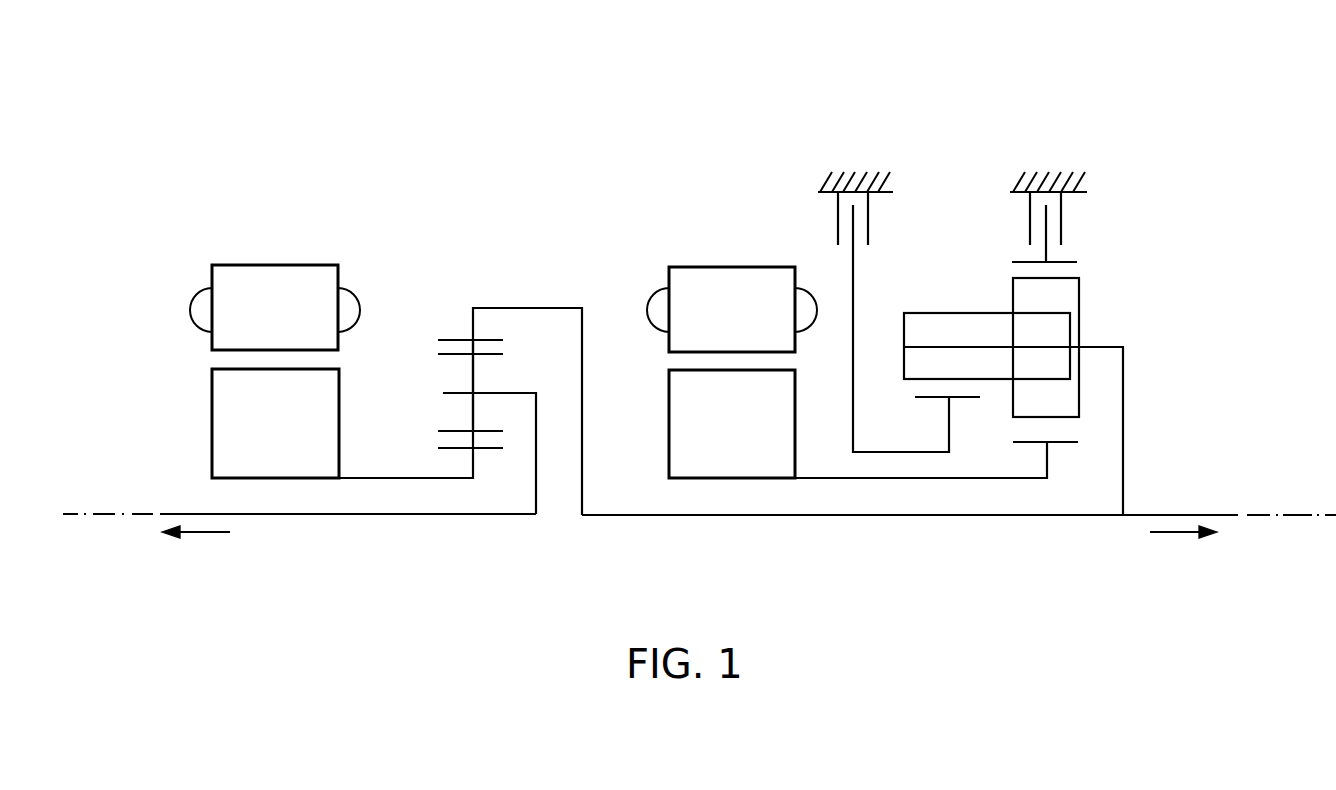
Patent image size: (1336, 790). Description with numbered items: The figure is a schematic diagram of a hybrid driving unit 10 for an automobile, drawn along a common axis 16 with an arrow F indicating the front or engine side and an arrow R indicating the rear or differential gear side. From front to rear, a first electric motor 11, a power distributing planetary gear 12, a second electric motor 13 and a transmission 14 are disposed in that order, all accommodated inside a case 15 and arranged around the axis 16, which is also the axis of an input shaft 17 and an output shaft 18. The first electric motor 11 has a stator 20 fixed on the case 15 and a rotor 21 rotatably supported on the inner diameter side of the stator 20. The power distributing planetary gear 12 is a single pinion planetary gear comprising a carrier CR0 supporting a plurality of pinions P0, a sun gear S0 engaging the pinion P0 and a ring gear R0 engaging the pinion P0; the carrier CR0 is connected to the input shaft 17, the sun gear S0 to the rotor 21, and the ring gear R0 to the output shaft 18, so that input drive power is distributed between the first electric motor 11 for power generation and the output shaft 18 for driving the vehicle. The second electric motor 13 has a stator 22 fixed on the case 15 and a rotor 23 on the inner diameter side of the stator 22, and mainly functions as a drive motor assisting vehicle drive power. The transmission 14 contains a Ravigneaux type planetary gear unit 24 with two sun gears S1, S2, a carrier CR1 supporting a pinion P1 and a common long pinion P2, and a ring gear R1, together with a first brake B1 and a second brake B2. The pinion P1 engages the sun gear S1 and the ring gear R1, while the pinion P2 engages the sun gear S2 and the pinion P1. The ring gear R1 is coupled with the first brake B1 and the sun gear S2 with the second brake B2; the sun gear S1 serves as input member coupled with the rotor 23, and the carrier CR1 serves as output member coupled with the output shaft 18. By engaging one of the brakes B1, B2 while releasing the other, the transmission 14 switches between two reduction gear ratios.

The hybrid driving unit 10 is at (623, 83).
The first electric motor 11 is at (260, 272).
The power distributing planetary gear 12 is at (460, 375).
The second electric motor 13 is at (719, 275).
The transmission 14 is at (999, 307).
The case 15 is at (827, 183).
The axis 16 is at (1268, 517).
The input shaft 17 is at (508, 514).
The output shaft 18 is at (838, 517).
The stator 20 is at (217, 340).
The rotor 21 is at (217, 428).
The stator 22 is at (680, 343).
The rotor 23 is at (675, 433).
The Ravigneaux type planetary gear unit 24 is at (961, 308).
The ring gear R0 is at (445, 337).
The pinion P0 is at (473, 372).
The sun gear S0 is at (443, 432).
The carrier CR0 is at (537, 415).
The second brake B2 is at (868, 223).
The first brake B1 is at (1030, 223).
The ring gear R1 is at (1070, 255).
The pinion P1 is at (1079, 292).
The pinion P2 is at (916, 313).
The sun gear S2 is at (932, 398).
The sun gear S1 is at (1060, 443).
The carrier CR1 is at (1123, 372).
The arrow F is at (196, 548).
The arrow R is at (1183, 549).